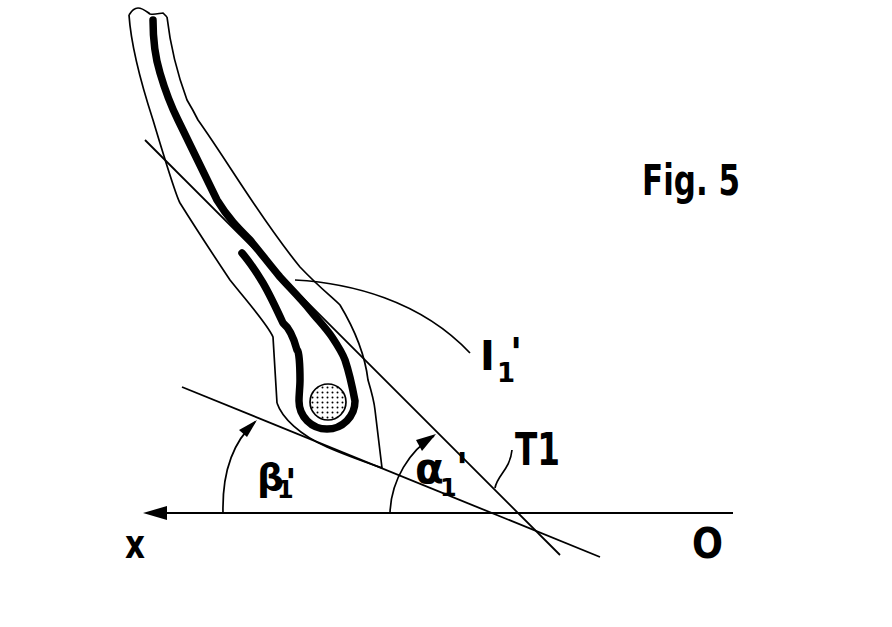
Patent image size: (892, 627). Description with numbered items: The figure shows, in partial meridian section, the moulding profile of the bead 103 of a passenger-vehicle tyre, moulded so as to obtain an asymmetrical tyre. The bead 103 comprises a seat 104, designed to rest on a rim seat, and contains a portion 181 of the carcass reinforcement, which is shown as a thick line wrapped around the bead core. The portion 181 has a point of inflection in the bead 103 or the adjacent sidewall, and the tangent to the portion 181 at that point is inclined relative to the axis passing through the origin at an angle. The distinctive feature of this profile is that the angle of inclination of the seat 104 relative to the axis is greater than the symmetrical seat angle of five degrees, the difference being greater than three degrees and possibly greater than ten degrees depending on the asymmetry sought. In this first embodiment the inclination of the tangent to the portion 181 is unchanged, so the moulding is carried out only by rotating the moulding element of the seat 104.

The bead 103 is at (285, 363).
The seat 104 is at (328, 447).
The portion of the carcass reinforcement 181 is at (272, 257).